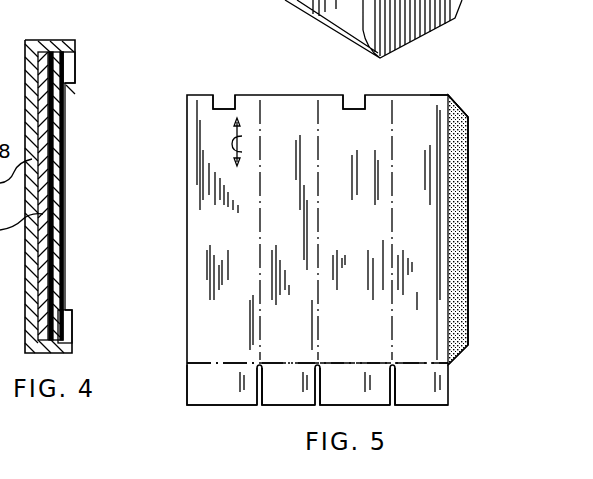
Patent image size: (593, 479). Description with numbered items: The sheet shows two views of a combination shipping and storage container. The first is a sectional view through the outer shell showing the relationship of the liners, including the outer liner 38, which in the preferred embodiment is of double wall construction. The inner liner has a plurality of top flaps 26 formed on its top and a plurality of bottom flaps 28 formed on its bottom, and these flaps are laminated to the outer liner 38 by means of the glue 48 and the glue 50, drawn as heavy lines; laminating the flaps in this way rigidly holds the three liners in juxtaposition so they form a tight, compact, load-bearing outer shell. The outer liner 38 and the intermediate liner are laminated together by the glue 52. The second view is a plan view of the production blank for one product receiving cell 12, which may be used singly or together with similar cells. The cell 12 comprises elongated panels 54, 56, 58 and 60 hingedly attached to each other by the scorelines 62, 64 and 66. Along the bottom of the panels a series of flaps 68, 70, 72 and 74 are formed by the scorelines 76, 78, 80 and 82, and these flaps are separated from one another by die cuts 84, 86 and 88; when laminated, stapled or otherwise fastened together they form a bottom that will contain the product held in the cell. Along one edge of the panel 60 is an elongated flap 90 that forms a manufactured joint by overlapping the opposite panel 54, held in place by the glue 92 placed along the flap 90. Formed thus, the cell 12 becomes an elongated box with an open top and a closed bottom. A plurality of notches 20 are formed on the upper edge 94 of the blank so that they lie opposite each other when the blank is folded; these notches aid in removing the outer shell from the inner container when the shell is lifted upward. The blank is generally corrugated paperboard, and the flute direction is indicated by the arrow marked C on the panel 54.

In FIG. 5, the cell 12 is at (467, 92).
In FIG. 5, the notches 20 is at (223, 102).
In FIG. 4, the top flaps 26 is at (79, 51).
In FIG. 4, the bottom flaps 28 is at (79, 349).
In FIG. 4, the outer liner 38 is at (58, 169).
In FIG. 4, the glue 48 is at (73, 78).
In FIG. 4, the glue 50 is at (72, 321).
In FIG. 4, the glue 52 is at (60, 126).
In FIG. 5, the elongated panel 54 is at (224, 236).
In FIG. 5, the elongated panel 56 is at (289, 236).
In FIG. 5, the elongated panel 58 is at (357, 236).
In FIG. 5, the elongated panel 60 is at (417, 236).
In FIG. 5, the scoreline 62 is at (260, 146).
In FIG. 5, the scoreline 64 is at (318, 152).
In FIG. 5, the scoreline 66 is at (392, 156).
In FIG. 5, the flap 68 is at (209, 393).
In FIG. 5, the flap 70 is at (282, 393).
In FIG. 5, the flap 72 is at (347, 393).
In FIG. 5, the flap 74 is at (414, 393).
In FIG. 5, the scoreline 76 is at (198, 362).
In FIG. 5, the scoreline 78 is at (266, 362).
In FIG. 5, the scoreline 80 is at (326, 362).
In FIG. 5, the scoreline 82 is at (403, 362).
In FIG. 5, the die cut 84 is at (254, 403).
In FIG. 5, the die cut 86 is at (316, 403).
In FIG. 5, the die cut 88 is at (400, 402).
In FIG. 5, the elongated flap 90 is at (466, 252).
In FIG. 5, the glue 92 is at (462, 194).
In FIG. 5, the upper edge 94 is at (432, 96).